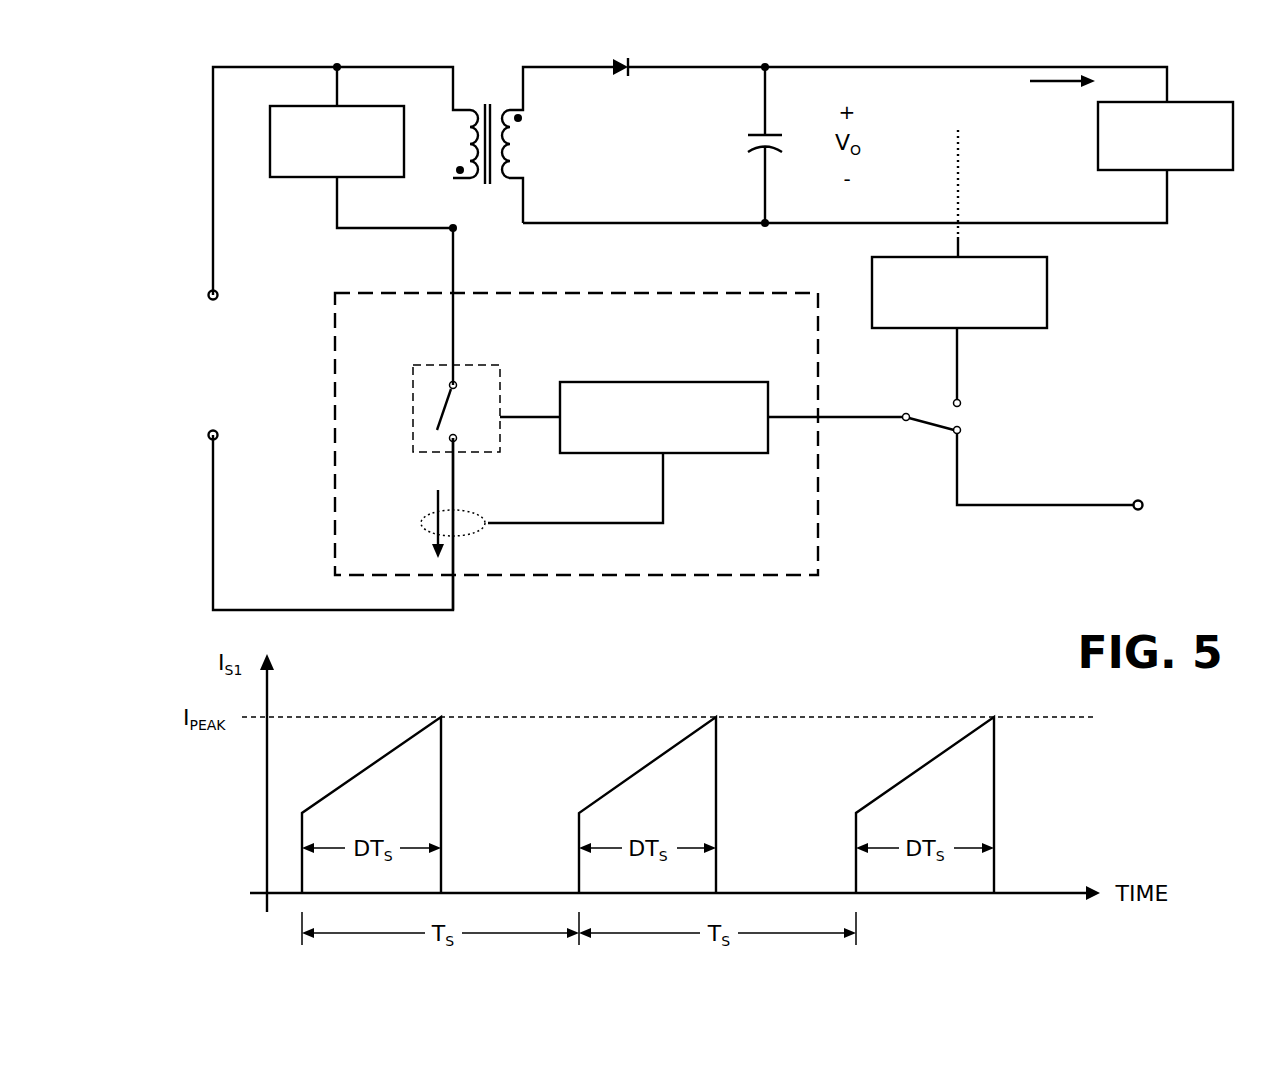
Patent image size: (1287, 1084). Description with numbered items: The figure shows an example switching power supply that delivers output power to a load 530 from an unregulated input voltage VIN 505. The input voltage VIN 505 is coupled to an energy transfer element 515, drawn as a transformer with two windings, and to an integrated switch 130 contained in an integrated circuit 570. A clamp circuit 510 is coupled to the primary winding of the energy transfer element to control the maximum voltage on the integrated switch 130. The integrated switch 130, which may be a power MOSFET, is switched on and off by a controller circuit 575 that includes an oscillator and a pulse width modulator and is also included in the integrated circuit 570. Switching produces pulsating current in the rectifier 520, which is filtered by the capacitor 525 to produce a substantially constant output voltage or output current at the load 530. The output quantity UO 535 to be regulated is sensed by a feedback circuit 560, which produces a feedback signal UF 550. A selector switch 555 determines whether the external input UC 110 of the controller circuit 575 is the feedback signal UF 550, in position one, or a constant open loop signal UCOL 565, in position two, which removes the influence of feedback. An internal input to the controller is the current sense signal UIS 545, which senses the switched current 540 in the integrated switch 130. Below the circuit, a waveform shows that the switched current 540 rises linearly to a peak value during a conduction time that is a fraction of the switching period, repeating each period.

The input voltage VIN 505 is at (195, 388).
The clamp circuit 510 is at (313, 192).
The energy transfer element T1 515 is at (492, 208).
The rectifier D1 520 is at (620, 78).
The capacitor C1 525 is at (753, 122).
The load 530 is at (1187, 88).
The output quantity UO 535 is at (975, 157).
The switched current IS1 540 is at (427, 492).
The current sense signal UIS 545 is at (670, 510).
The feedback signal UF 550 is at (988, 337).
The switch S4 555 is at (932, 430).
The feedback circuit 560 is at (1055, 290).
The open loop signal UCOL 565 is at (1142, 492).
The integrated circuit 570 is at (625, 583).
The controller circuit 575 is at (680, 373).
The integrated switch S1 130 is at (437, 360).
The external input UC 110 is at (863, 407).